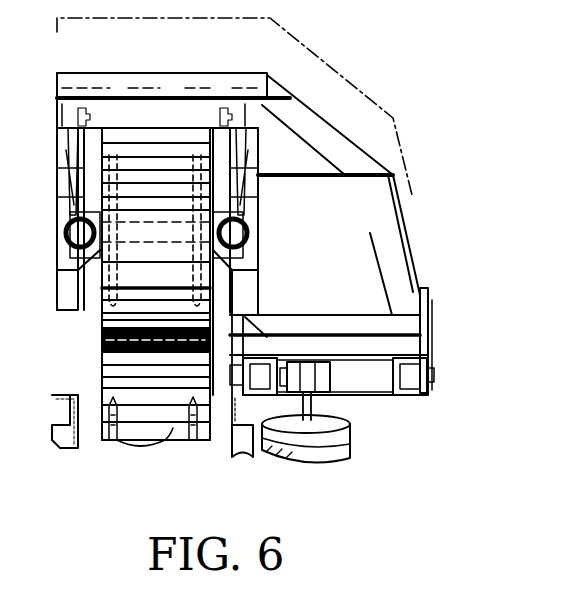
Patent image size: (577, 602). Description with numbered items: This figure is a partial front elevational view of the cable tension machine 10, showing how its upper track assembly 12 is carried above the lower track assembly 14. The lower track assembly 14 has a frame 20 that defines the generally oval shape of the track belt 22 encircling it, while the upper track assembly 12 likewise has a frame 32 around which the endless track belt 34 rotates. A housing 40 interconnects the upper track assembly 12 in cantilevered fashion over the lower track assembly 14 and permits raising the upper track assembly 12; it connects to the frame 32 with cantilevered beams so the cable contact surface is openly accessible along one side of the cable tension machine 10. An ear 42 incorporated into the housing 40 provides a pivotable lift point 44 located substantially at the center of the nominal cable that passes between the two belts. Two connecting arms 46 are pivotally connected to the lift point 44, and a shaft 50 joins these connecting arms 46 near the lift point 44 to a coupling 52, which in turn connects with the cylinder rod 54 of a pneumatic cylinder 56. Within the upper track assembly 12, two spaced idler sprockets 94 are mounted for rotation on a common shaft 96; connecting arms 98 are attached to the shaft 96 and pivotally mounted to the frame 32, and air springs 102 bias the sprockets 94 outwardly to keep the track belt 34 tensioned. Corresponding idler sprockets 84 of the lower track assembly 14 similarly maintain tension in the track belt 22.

The cable tension machine 10 is at (343, 48).
The upper track assembly 12 is at (90, 351).
The lower track assembly 14 is at (102, 462).
The frame 20 is at (52, 432).
The track belt 22 is at (172, 440).
The frame 32 is at (60, 145).
The track belt 34 is at (100, 333).
The housing 40 is at (384, 206).
The ear 42 is at (436, 308).
The lift point 44 is at (442, 380).
The connecting arms 46 is at (270, 358).
The shaft 50 is at (392, 396).
The coupling 52 is at (320, 360).
The cylinder rod 54 is at (312, 408).
The pneumatic cylinder 56 is at (336, 462).
The idler sprockets 84 is at (193, 443).
The idler sprockets 94 is at (200, 160).
The shaft 96 is at (75, 276).
The connecting arms 98 is at (75, 186).
The air springs 102 is at (66, 242).